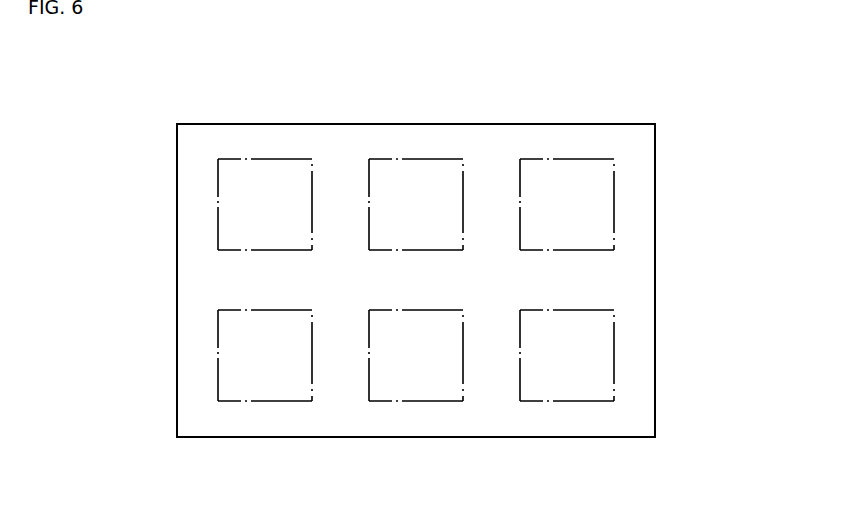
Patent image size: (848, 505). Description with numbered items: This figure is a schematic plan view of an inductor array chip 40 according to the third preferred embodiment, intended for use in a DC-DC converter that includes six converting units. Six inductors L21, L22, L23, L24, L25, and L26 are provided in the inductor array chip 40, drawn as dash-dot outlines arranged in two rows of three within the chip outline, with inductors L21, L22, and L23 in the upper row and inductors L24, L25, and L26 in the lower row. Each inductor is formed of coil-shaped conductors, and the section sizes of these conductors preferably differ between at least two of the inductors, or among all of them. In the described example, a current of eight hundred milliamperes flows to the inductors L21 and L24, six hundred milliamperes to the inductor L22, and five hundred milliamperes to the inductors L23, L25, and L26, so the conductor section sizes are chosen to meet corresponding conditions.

The inductor array chip 40 is at (698, 93).
The inductor L21 is at (258, 157).
The inductor L22 is at (424, 157).
The inductor L23 is at (575, 157).
The inductor L24 is at (257, 403).
The inductor L25 is at (422, 403).
The inductor L26 is at (573, 403).